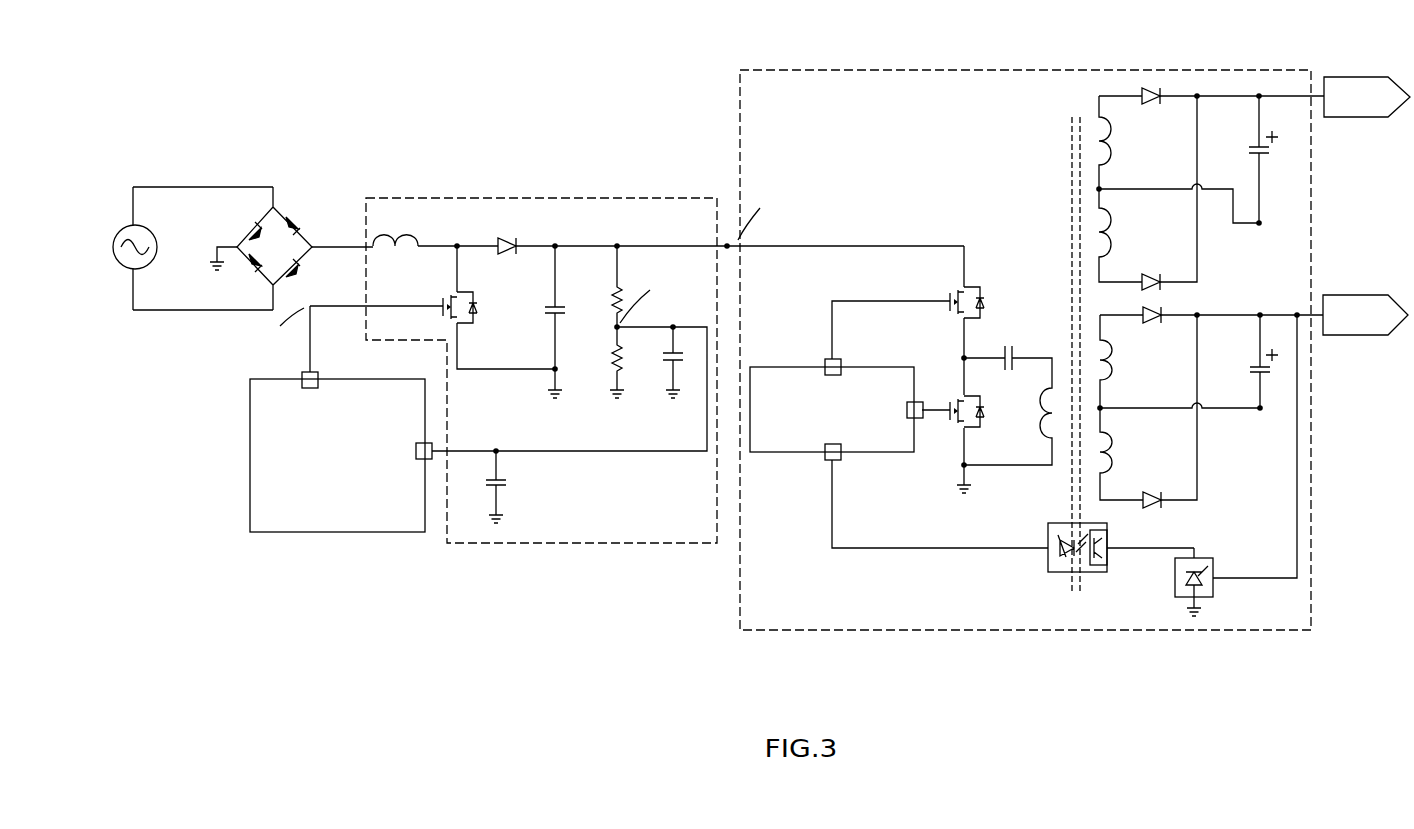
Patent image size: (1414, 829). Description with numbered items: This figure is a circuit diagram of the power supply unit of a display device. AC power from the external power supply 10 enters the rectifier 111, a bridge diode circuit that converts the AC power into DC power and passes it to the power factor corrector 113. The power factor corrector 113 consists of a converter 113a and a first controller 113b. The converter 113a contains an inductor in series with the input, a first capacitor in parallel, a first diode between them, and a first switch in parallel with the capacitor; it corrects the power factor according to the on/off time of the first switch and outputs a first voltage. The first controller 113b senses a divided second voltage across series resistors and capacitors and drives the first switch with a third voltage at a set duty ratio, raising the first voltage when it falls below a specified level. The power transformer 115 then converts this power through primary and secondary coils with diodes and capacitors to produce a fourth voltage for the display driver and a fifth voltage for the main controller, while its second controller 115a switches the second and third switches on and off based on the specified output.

The external power supply 10 is at (113, 247).
The rectifier 111 is at (298, 202).
The power factor corrector 113 is at (495, 98).
The converter 113a is at (601, 198).
The first controller 113b is at (337, 532).
The power transformer 115 is at (965, 68).
The second controller 115a is at (783, 452).